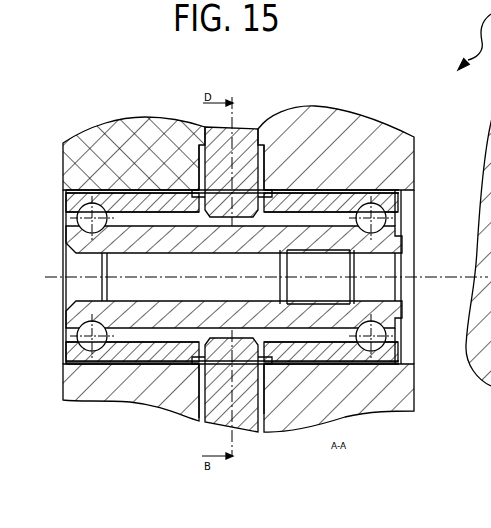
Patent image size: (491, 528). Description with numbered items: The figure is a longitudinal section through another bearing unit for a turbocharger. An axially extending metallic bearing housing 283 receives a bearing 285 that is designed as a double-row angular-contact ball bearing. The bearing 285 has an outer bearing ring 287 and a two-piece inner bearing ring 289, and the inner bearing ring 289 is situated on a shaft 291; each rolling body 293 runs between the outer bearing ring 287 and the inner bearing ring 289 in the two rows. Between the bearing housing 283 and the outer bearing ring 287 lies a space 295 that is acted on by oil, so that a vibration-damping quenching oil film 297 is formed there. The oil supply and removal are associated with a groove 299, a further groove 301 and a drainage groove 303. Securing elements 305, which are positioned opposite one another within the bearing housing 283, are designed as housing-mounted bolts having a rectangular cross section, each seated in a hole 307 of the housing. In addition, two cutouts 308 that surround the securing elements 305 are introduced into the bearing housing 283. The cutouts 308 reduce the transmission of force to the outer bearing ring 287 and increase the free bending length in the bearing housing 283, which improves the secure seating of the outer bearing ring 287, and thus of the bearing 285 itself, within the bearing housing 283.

The bearing housing 283 is at (77, 165).
The bearing 285 is at (402, 198).
The outer bearing ring 287 is at (398, 197).
The inner bearing ring 289 is at (96, 232).
The shaft 291 is at (92, 277).
The rolling body 293 is at (93, 218).
The space 295 is at (303, 194).
The oil film 297 is at (313, 279).
The groove 299 is at (150, 192).
The groove 301 is at (312, 194).
The drainage groove 303 is at (195, 193).
The securing element 305 is at (255, 152).
The hole 307 is at (198, 172).
The cutouts 308 is at (263, 186).